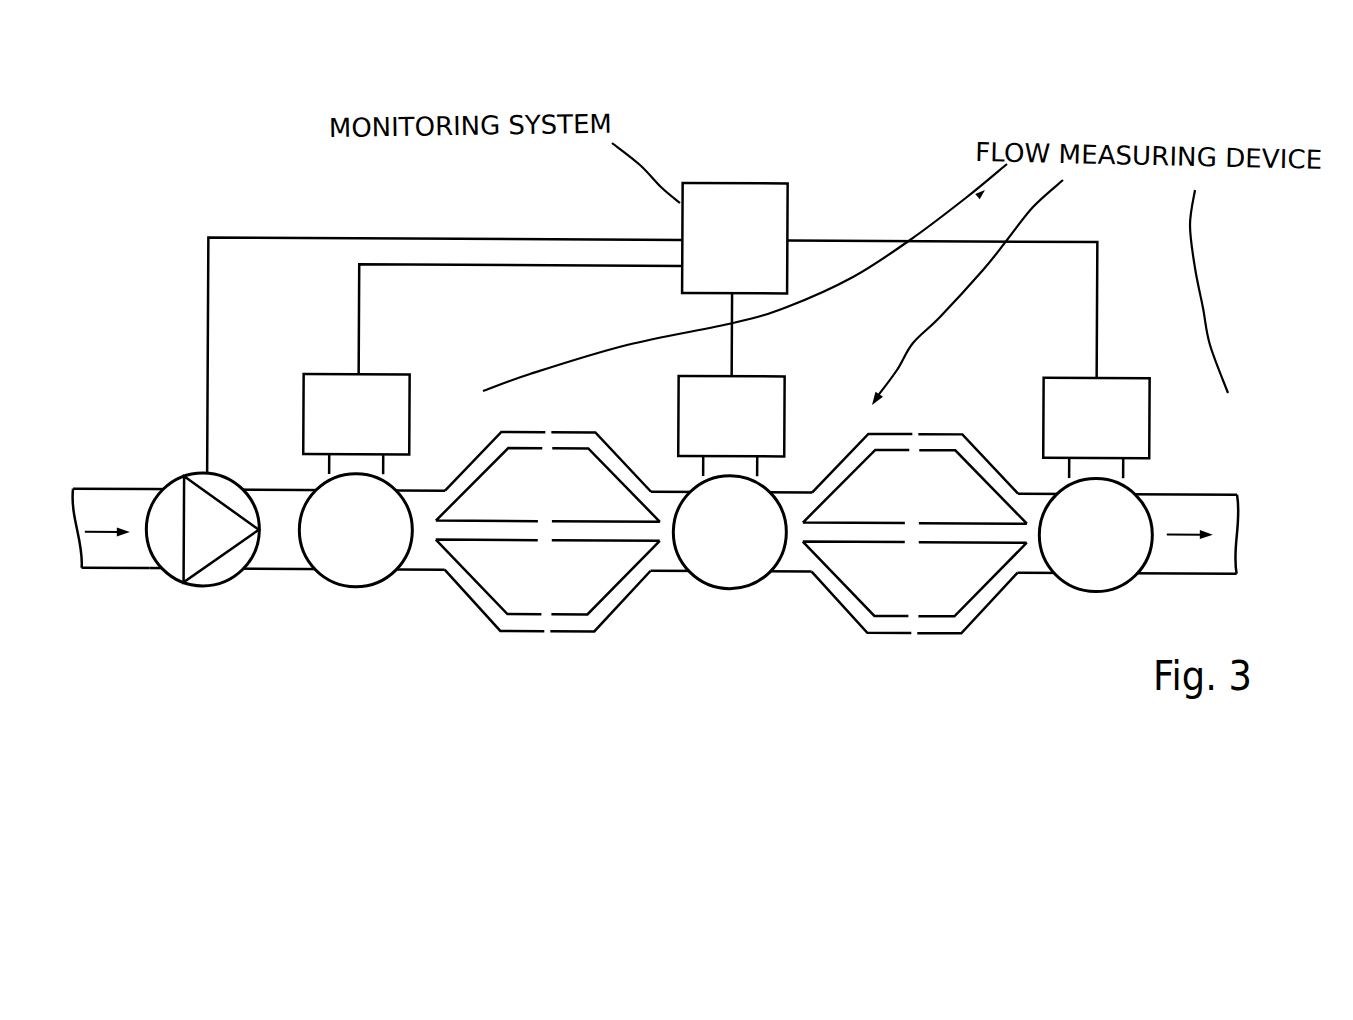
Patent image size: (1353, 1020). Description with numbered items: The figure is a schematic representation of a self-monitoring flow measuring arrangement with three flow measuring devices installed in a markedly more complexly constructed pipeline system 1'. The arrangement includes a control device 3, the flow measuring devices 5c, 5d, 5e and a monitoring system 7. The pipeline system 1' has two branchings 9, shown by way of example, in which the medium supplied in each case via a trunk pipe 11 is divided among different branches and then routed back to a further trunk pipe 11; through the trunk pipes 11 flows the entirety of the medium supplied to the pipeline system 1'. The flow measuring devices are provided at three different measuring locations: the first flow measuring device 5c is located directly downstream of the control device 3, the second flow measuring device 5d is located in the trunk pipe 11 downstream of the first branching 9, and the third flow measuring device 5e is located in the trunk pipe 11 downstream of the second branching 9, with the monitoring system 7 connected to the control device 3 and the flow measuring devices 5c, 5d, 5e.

The pipeline system 1' is at (237, 633).
The control device 3 is at (208, 581).
The first flow measuring device 5c is at (414, 473).
The second flow measuring device 5d is at (790, 475).
The third flow measuring device 5e is at (1160, 476).
The monitoring system 7 is at (744, 251).
The branching 9 is at (549, 652).
The trunk pipe 11 is at (278, 563).